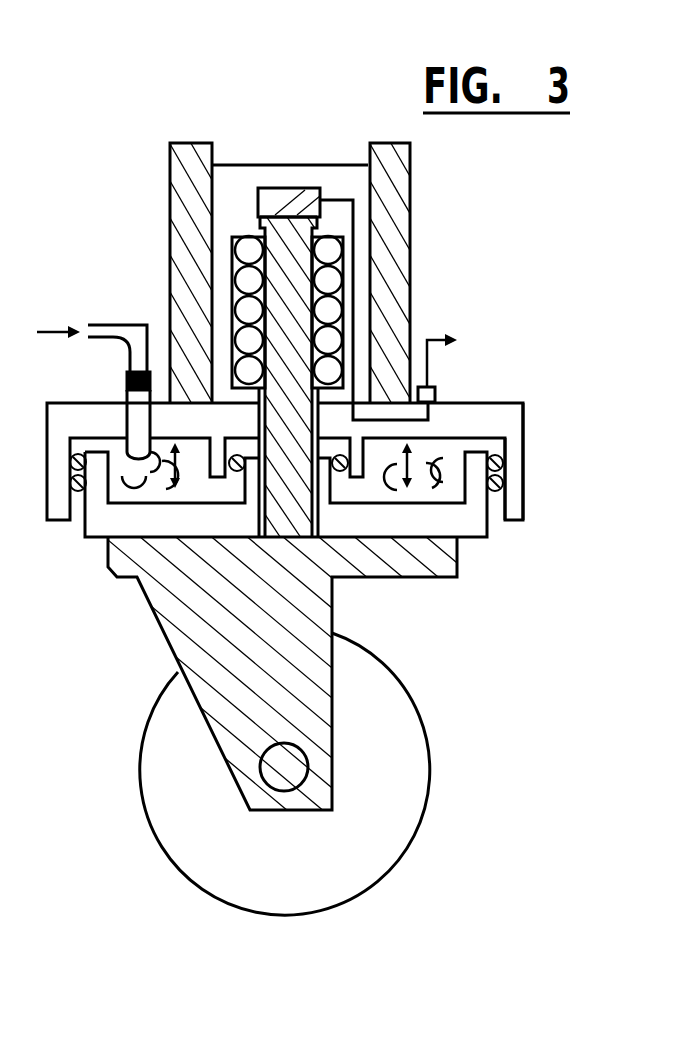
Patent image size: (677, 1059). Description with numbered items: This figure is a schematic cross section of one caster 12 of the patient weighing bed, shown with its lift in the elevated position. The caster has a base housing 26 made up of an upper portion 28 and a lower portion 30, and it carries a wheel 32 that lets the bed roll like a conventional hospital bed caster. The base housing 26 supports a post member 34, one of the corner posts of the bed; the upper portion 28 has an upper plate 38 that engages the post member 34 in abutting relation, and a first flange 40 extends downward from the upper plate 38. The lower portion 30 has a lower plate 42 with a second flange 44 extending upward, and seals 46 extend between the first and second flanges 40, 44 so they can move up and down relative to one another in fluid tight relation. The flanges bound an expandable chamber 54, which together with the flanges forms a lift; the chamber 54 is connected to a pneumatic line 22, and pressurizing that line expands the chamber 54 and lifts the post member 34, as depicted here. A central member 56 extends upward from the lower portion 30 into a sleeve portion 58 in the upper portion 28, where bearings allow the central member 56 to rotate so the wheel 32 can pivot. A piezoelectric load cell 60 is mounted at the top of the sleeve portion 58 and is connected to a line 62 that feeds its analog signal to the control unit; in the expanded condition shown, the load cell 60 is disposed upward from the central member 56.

The caster 12 is at (574, 304).
The pneumatic line 22 is at (115, 338).
The base housing 26 is at (546, 486).
The upper portion 28 is at (343, 186).
The lower portion 30 is at (457, 565).
The wheel 32 is at (285, 774).
The post member 34 is at (410, 243).
The upper plate 38 is at (463, 402).
The first flange 40 is at (523, 448).
The lower plate 42 is at (465, 520).
The second flange 44 is at (97, 512).
The seals 46 is at (505, 493).
The expandable chamber 54 is at (367, 492).
The central member 56 is at (288, 313).
The sleeve portion 58 is at (253, 400).
The load cell 60 is at (298, 188).
The line 62 is at (438, 352).